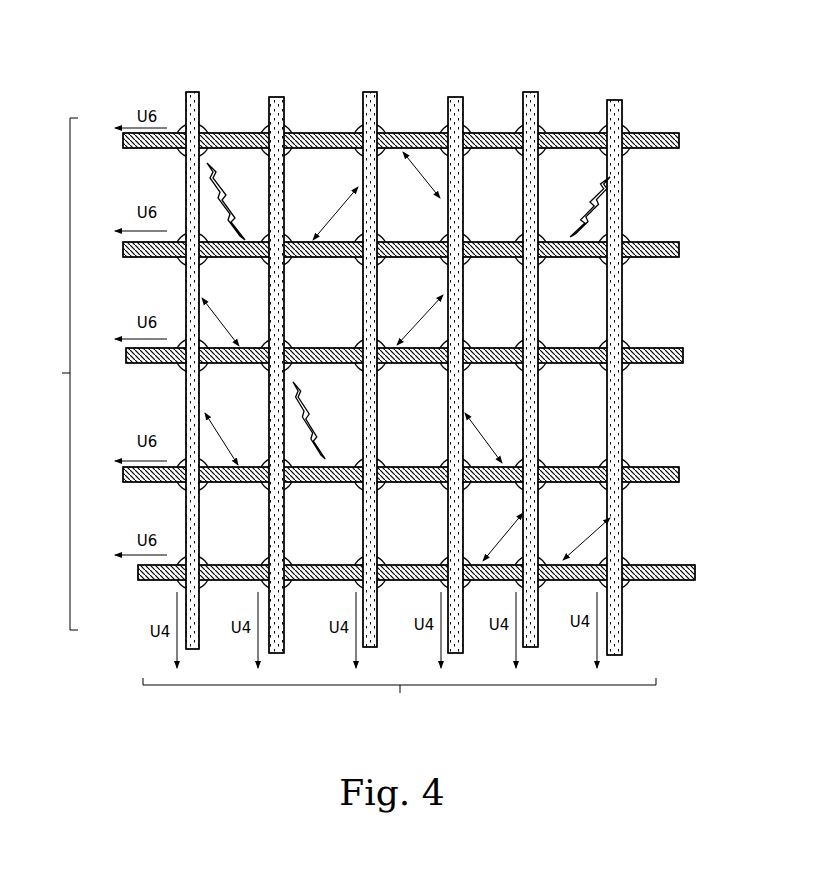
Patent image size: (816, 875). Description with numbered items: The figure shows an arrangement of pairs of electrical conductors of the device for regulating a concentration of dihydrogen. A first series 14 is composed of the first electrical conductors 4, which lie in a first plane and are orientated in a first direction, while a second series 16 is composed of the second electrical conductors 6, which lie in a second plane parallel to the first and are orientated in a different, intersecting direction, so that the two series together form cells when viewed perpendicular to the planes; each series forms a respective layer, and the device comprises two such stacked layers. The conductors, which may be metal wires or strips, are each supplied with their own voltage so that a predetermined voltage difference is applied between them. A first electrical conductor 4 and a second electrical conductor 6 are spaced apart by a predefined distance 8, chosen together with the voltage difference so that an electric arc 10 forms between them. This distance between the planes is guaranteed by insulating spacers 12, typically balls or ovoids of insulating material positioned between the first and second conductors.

The first electrical conductor 4 is at (197, 90).
The second electrical conductor 6 is at (676, 131).
The predefined distance 8 is at (406, 356).
The electric arc 10 is at (218, 177).
The insulating spacer 12 is at (293, 552).
The first series 14 is at (399, 705).
The second series 16 is at (55, 374).